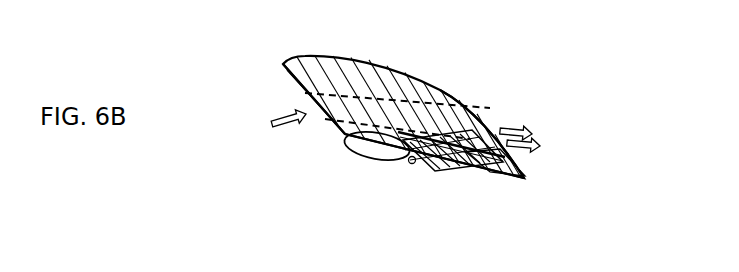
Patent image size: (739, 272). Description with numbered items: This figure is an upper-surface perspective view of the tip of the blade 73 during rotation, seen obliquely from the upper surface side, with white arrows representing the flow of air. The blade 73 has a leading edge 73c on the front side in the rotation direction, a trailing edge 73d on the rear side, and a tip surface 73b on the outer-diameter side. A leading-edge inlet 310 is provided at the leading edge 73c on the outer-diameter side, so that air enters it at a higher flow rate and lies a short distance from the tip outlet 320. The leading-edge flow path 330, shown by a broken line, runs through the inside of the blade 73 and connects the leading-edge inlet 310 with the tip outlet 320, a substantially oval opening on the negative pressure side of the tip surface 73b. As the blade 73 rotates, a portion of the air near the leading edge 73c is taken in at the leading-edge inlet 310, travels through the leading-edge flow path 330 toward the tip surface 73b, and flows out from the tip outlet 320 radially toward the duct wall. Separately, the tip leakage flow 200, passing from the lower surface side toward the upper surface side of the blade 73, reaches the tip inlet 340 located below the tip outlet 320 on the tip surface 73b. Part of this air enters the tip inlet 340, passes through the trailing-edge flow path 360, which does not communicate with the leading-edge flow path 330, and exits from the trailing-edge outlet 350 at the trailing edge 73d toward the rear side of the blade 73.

The blade 73 is at (375, 66).
The tip surface 73b is at (372, 160).
The leading edge 73c is at (298, 90).
The trailing edge 73d is at (472, 109).
The tip leakage flow 200 is at (397, 165).
The leading-edge inlet 310 is at (320, 112).
The tip outlet 320 is at (465, 172).
The leading-edge flow path 330 is at (345, 140).
The tip inlet 340 is at (415, 168).
The trailing-edge outlet 350 is at (505, 150).
The trailing-edge flow path 360 is at (512, 180).